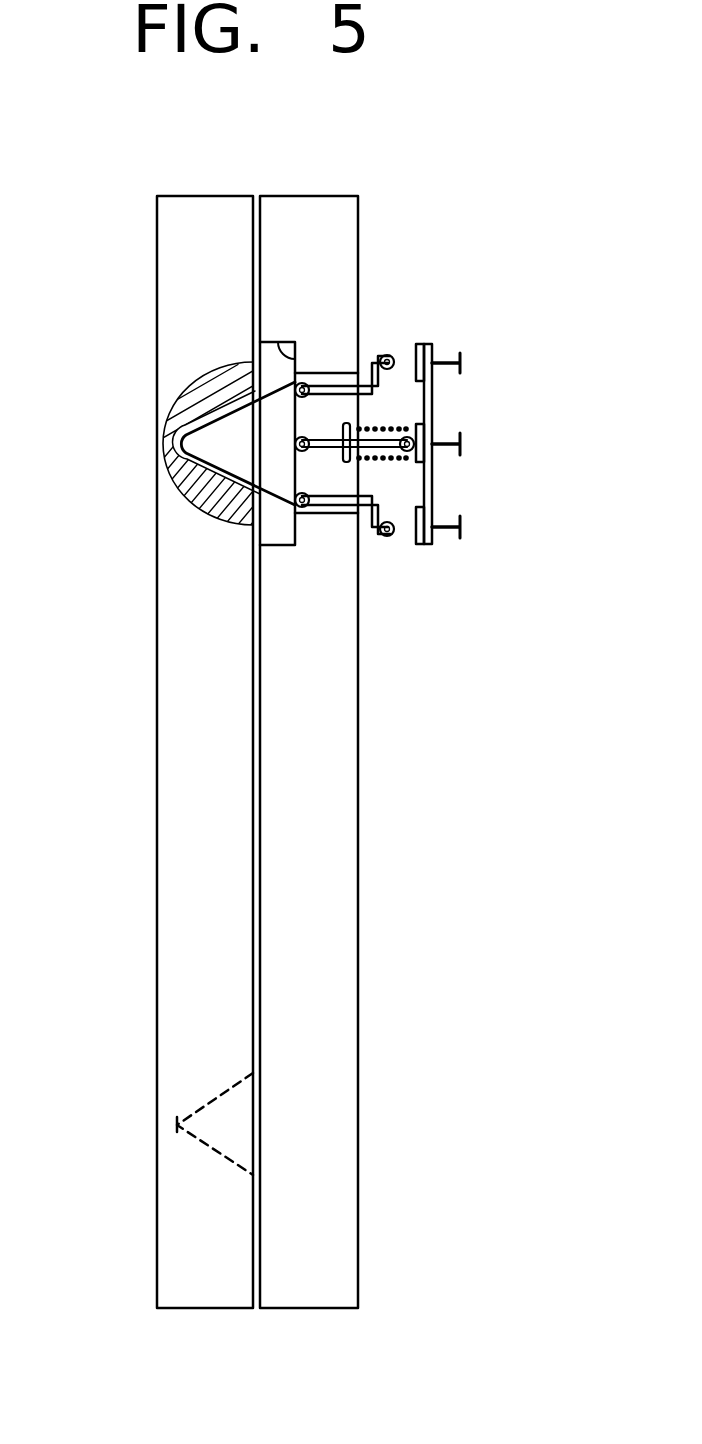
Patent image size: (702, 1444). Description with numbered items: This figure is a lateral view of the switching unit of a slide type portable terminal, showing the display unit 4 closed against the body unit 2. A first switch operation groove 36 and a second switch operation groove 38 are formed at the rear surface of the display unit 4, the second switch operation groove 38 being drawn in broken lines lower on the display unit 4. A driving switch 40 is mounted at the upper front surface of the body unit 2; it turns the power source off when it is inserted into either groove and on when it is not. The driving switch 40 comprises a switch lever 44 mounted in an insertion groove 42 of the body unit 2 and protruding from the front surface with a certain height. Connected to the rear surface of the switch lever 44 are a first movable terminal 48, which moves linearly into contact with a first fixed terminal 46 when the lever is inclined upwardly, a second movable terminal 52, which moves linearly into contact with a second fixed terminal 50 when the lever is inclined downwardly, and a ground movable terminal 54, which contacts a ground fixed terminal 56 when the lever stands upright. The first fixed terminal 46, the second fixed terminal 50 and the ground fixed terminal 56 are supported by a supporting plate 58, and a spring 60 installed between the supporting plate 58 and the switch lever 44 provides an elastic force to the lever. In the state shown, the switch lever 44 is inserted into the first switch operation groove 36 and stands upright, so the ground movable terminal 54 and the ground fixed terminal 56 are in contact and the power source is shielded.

The body unit 2 is at (343, 768).
The display unit 4 is at (167, 770).
The first switch operation groove 36 is at (167, 447).
The second switch operation groove 38 is at (173, 1128).
The driving switch 40 is at (409, 329).
The insertion groove 42 is at (278, 342).
The switch lever 44 is at (235, 460).
The first fixed terminal 46 is at (435, 380).
The first movable terminal 48 is at (395, 358).
The second fixed terminal 50 is at (435, 535).
The second movable terminal 52 is at (390, 537).
The ground movable terminal 54 is at (433, 428).
The ground fixed terminal 56 is at (433, 462).
The supporting plate 58 is at (435, 498).
The spring 60 is at (383, 462).